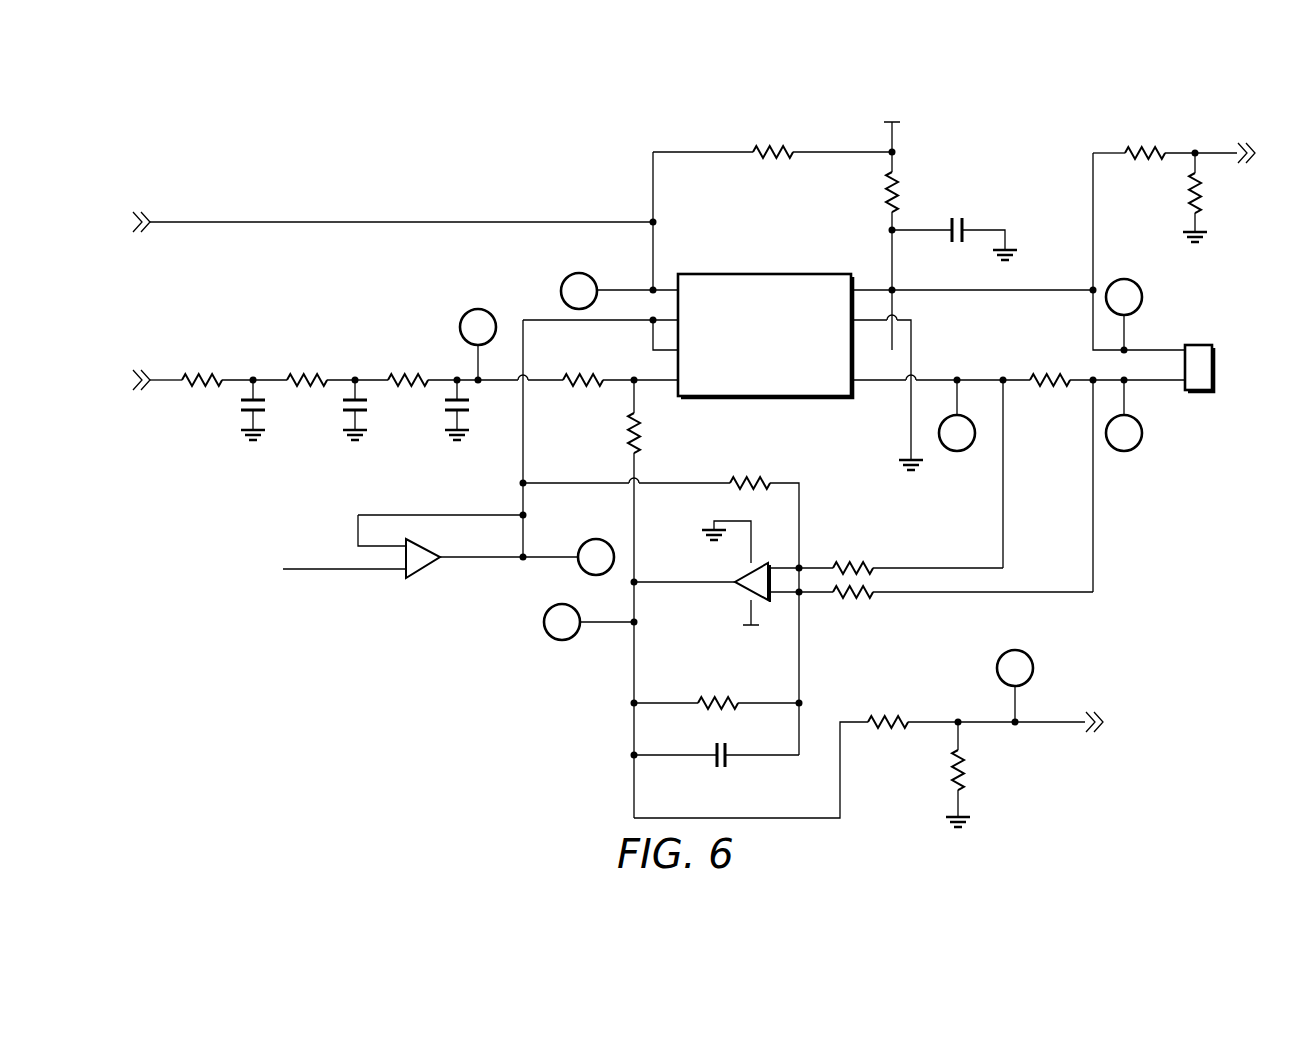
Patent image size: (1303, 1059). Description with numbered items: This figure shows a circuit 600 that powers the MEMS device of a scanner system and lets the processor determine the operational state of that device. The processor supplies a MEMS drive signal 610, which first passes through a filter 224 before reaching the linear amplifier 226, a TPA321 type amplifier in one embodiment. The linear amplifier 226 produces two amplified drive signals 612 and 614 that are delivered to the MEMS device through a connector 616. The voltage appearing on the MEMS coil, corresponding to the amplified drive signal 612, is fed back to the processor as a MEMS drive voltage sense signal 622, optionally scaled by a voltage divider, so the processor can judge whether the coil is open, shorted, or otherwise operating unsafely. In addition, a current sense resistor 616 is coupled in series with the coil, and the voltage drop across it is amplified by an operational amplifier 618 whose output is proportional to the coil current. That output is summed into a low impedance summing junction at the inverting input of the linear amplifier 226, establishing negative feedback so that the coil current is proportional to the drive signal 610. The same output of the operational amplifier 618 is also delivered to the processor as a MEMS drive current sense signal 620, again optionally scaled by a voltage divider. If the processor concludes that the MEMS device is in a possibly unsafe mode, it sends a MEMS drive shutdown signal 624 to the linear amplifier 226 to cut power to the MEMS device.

The circuit 600 is at (176, 122).
The drive signal 610 is at (151, 377).
The MEMS drive shutdown signal 624 is at (250, 222).
The filter 224 is at (355, 343).
The linear amplifier 226 is at (840, 274).
The amplified drive signal 612 is at (1040, 290).
The amplified drive signal 614 is at (982, 378).
The connector / current sense resistor 616 is at (1046, 388).
The operational amplifier 618 is at (765, 560).
The MEMS drive current sense signal 620 is at (1058, 719).
The MEMS drive voltage sense signal 622 is at (1250, 167).